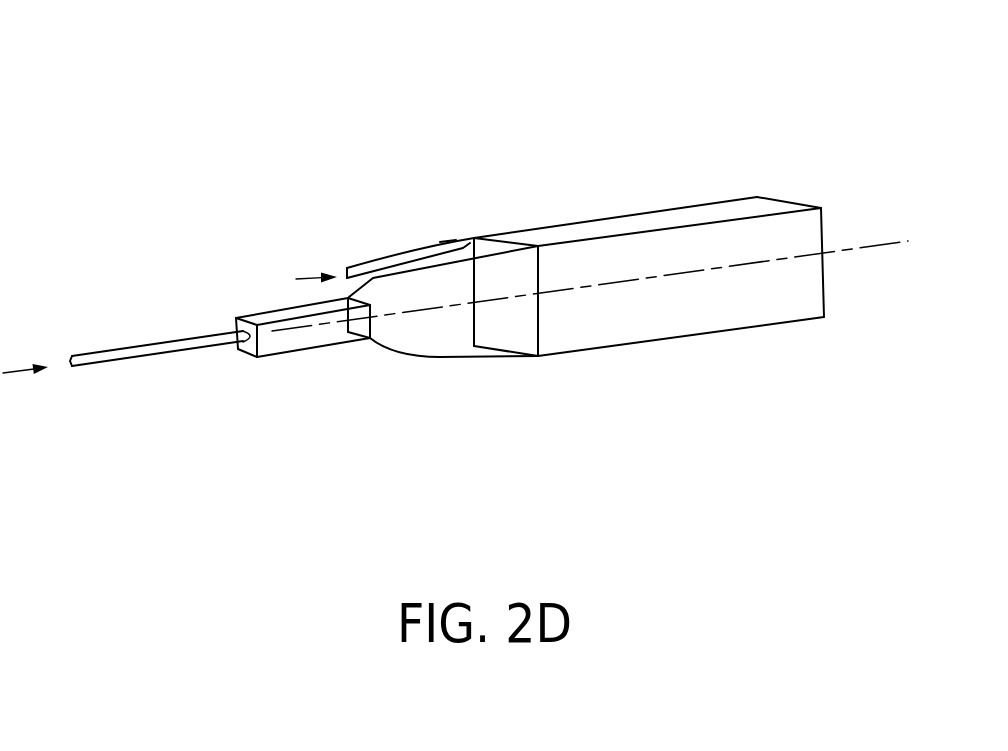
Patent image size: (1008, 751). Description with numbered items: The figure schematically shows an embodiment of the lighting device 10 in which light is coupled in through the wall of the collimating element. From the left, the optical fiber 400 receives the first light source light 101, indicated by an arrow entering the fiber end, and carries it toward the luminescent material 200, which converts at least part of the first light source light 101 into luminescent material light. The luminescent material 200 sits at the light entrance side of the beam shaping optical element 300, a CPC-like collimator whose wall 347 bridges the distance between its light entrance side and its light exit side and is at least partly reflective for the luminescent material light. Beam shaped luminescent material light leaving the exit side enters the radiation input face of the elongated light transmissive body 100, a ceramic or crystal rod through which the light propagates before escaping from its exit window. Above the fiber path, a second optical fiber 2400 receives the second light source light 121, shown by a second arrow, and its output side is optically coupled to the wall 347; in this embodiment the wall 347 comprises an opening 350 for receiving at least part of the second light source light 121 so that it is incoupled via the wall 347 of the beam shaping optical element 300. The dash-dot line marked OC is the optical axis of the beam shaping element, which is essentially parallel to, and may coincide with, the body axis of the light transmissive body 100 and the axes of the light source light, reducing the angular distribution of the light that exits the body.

The lighting device 10 is at (129, 58).
The elongated light transmissive body 100 is at (698, 215).
The first light source light 101 is at (12, 370).
The second light source light 121 is at (296, 279).
The luminescent material 200 is at (366, 324).
The beam shaping optical element 300 is at (440, 323).
The wall 347 is at (490, 246).
The opening 350 is at (448, 240).
The optical fiber 400 is at (175, 318).
The second optical fiber 2400 is at (363, 265).
The optical axis of the beam shaping element OC is at (882, 240).